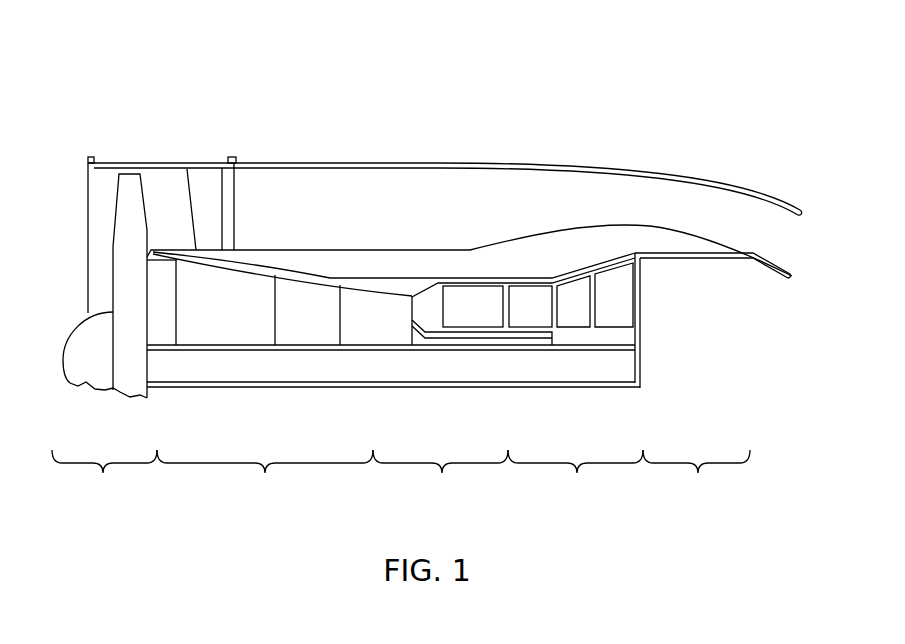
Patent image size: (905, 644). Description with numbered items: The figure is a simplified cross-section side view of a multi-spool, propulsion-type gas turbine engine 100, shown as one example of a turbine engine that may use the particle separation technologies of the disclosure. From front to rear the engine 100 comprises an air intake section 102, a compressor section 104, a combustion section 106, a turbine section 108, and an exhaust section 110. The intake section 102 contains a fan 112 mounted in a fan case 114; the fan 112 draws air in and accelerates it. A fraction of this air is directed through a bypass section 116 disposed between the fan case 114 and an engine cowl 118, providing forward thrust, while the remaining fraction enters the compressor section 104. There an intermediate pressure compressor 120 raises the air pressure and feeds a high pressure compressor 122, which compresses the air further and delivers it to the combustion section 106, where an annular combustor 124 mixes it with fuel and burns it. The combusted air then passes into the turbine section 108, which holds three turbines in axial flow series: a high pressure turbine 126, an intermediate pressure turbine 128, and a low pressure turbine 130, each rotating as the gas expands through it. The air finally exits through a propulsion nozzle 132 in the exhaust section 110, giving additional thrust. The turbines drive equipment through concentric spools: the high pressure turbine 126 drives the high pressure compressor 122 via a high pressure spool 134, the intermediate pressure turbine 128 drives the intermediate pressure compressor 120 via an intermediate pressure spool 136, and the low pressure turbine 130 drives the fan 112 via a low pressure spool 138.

The gas turbine engine 100 is at (265, 131).
The air intake section 102 is at (104, 477).
The compressor section 104 is at (265, 477).
The combustion section 106 is at (440, 477).
The turbine section 108 is at (575, 477).
The exhaust section 110 is at (696, 477).
The fan 112 is at (123, 249).
The fan case 114 is at (168, 162).
The bypass section 116 is at (380, 178).
The engine cowl 118 is at (436, 249).
The intermediate pressure compressor 120 is at (230, 337).
The high pressure compressor 122 is at (375, 337).
The annular combustor 124 is at (482, 296).
The high pressure turbine 126 is at (533, 296).
The intermediate pressure turbine 128 is at (579, 284).
The low pressure turbine 130 is at (623, 280).
The propulsion nozzle 132 is at (756, 318).
The high pressure spool 134 is at (447, 335).
The intermediate pressure spool 136 is at (513, 350).
The low pressure spool 138 is at (568, 377).